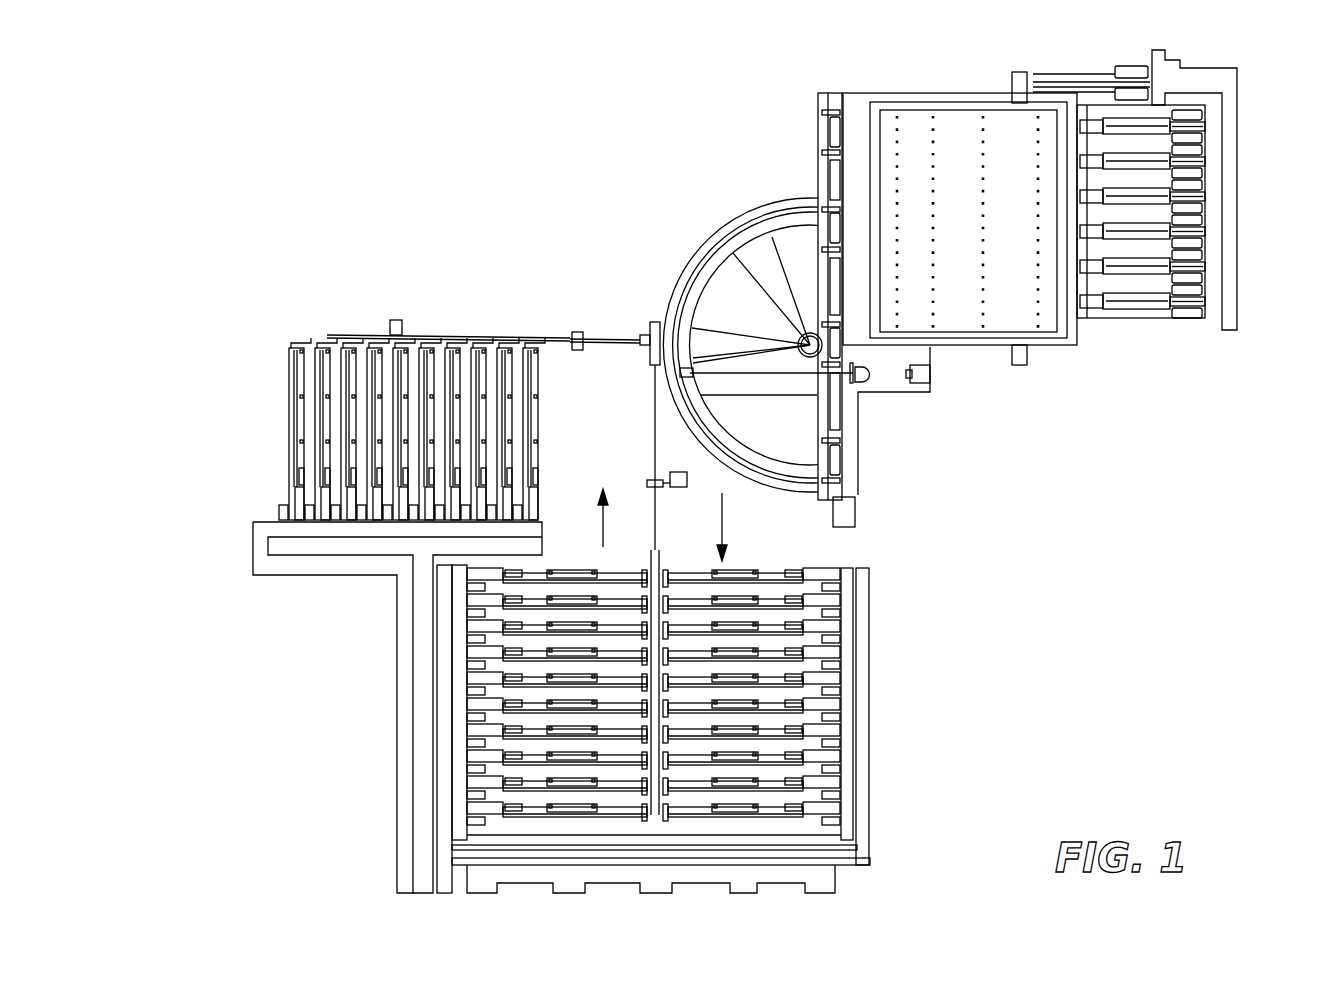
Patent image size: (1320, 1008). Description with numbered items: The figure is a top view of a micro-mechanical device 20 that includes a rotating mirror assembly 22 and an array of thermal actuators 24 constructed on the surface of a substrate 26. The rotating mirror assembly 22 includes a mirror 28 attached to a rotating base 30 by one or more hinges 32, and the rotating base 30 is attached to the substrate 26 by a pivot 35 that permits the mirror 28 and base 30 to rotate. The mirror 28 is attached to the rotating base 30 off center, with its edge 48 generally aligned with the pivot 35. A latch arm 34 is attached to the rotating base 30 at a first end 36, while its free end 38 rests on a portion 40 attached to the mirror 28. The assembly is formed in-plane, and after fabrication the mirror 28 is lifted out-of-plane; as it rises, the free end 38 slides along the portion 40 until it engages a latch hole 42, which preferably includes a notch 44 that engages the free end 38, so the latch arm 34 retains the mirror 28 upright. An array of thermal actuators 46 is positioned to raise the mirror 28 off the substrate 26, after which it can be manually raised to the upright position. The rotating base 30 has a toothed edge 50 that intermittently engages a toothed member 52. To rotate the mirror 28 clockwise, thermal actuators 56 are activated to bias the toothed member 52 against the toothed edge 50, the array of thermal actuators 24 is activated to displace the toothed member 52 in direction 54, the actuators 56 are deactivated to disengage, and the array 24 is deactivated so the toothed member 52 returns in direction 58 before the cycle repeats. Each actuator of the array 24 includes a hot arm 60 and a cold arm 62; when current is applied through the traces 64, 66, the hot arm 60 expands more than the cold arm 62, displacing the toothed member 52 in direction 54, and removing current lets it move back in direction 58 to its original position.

The micro-mechanical device 20 is at (440, 175).
The rotating mirror assembly 22 is at (691, 187).
The array of thermal actuators 24 is at (905, 627).
The substrate 26 is at (1052, 703).
The mirror 28 is at (953, 125).
The rotating base 30 is at (684, 252).
The hinges 32 is at (832, 130).
The latch arm 34 is at (755, 373).
The pivot 35 is at (800, 340).
The first end 36 is at (683, 373).
The free end 38 is at (862, 382).
The portion 40 is at (893, 383).
The latch hole 42 is at (932, 372).
The notch 44 is at (922, 383).
The array of thermal actuators 46 is at (1118, 332).
The edge 48 is at (1045, 350).
The toothed edge 50 is at (673, 290).
The toothed member 52 is at (652, 326).
The direction 54 is at (580, 518).
The thermal actuators 56 is at (301, 327).
The direction 58 is at (722, 515).
The hot arm 60 is at (803, 822).
The cold arm 62 is at (727, 807).
The trace 64 is at (848, 566).
The trace 66 is at (866, 568).